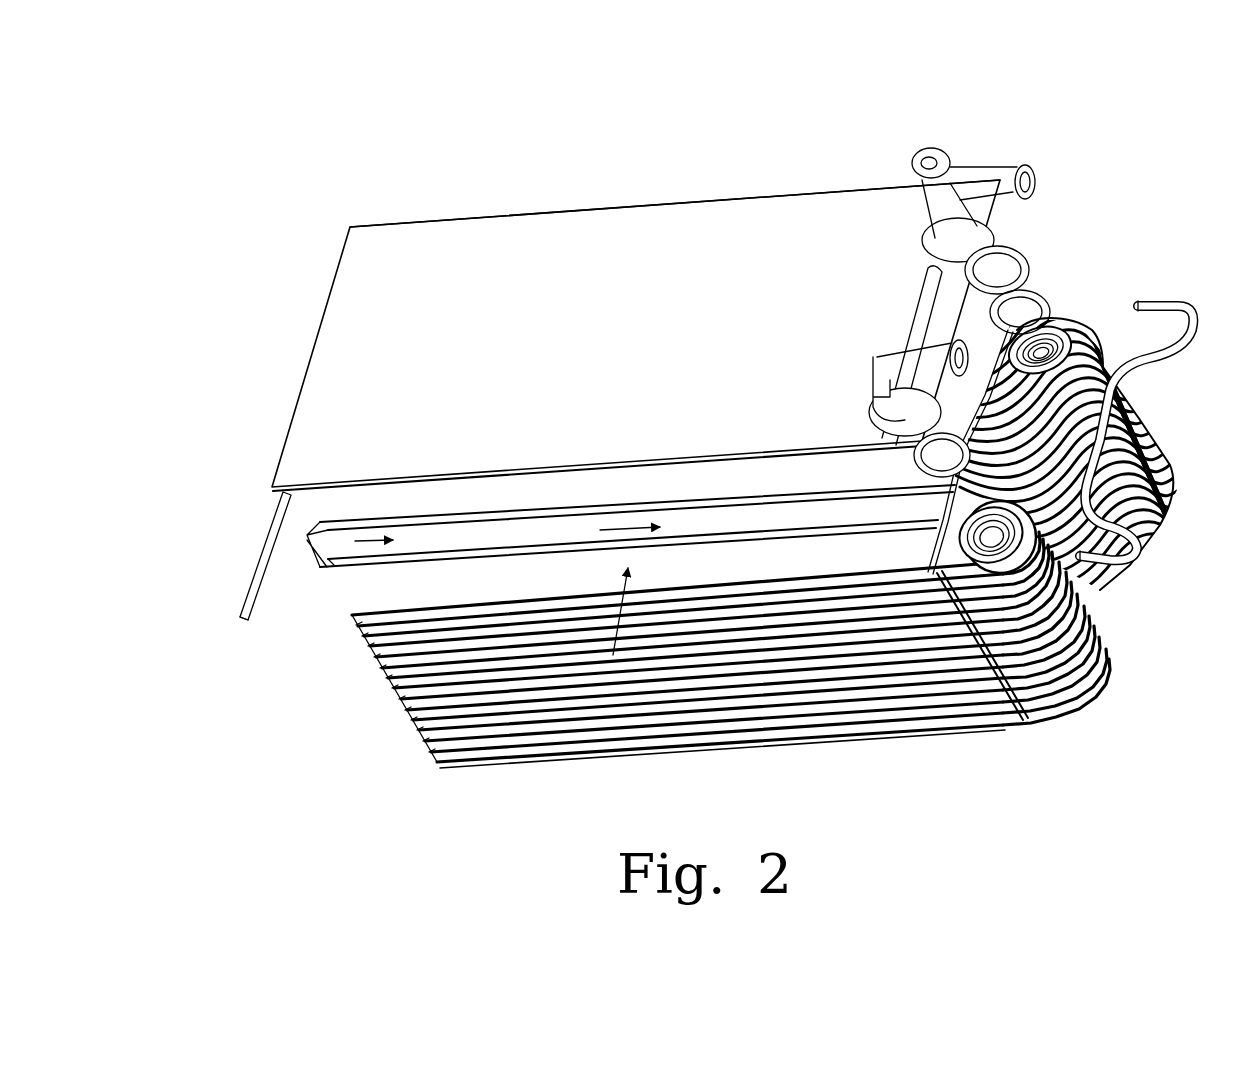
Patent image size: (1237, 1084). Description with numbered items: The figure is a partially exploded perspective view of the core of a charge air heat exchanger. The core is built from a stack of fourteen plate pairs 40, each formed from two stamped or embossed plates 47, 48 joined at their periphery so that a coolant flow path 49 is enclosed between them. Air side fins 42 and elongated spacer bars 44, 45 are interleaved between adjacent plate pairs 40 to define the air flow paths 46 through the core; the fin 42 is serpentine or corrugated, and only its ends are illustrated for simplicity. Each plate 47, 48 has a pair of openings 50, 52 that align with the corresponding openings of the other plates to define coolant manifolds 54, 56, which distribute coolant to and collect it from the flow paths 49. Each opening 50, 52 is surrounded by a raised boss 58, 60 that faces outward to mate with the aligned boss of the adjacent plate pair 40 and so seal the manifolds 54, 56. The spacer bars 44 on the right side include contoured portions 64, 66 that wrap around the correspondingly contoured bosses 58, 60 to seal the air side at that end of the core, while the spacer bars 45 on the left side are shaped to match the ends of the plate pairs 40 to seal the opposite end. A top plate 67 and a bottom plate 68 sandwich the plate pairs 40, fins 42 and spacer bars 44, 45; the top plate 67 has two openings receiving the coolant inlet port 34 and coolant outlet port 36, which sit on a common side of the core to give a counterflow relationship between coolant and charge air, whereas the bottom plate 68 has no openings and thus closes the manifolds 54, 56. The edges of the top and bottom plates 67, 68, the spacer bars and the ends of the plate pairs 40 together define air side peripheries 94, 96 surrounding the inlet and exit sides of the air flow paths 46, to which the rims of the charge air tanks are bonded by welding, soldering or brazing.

The coolant inlet port 34 is at (966, 160).
The coolant outlet port 36 is at (884, 368).
The stacked plate pair 40 is at (300, 556).
The air side fin 42 is at (1026, 300).
The spacer bar 44 is at (1155, 294).
The spacer bar 45 is at (236, 578).
The air flow path 46 is at (638, 602).
The stamped plate 47 is at (312, 505).
The stamped plate 48 is at (345, 570).
The coolant flow path 49 is at (607, 532).
The opening 50 is at (1012, 250).
The opening 52 is at (913, 460).
The coolant manifold 54 is at (1044, 330).
The coolant manifold 56 is at (960, 536).
The raised boss 58 is at (921, 291).
The raised boss 60 is at (935, 497).
The contoured portion 64 is at (1178, 305).
The contoured portion 66 is at (1115, 553).
The top plate 67 is at (626, 235).
The bottom plate 68 is at (834, 742).
The air side periphery 94 is at (997, 730).
The air side periphery 96 is at (792, 197).